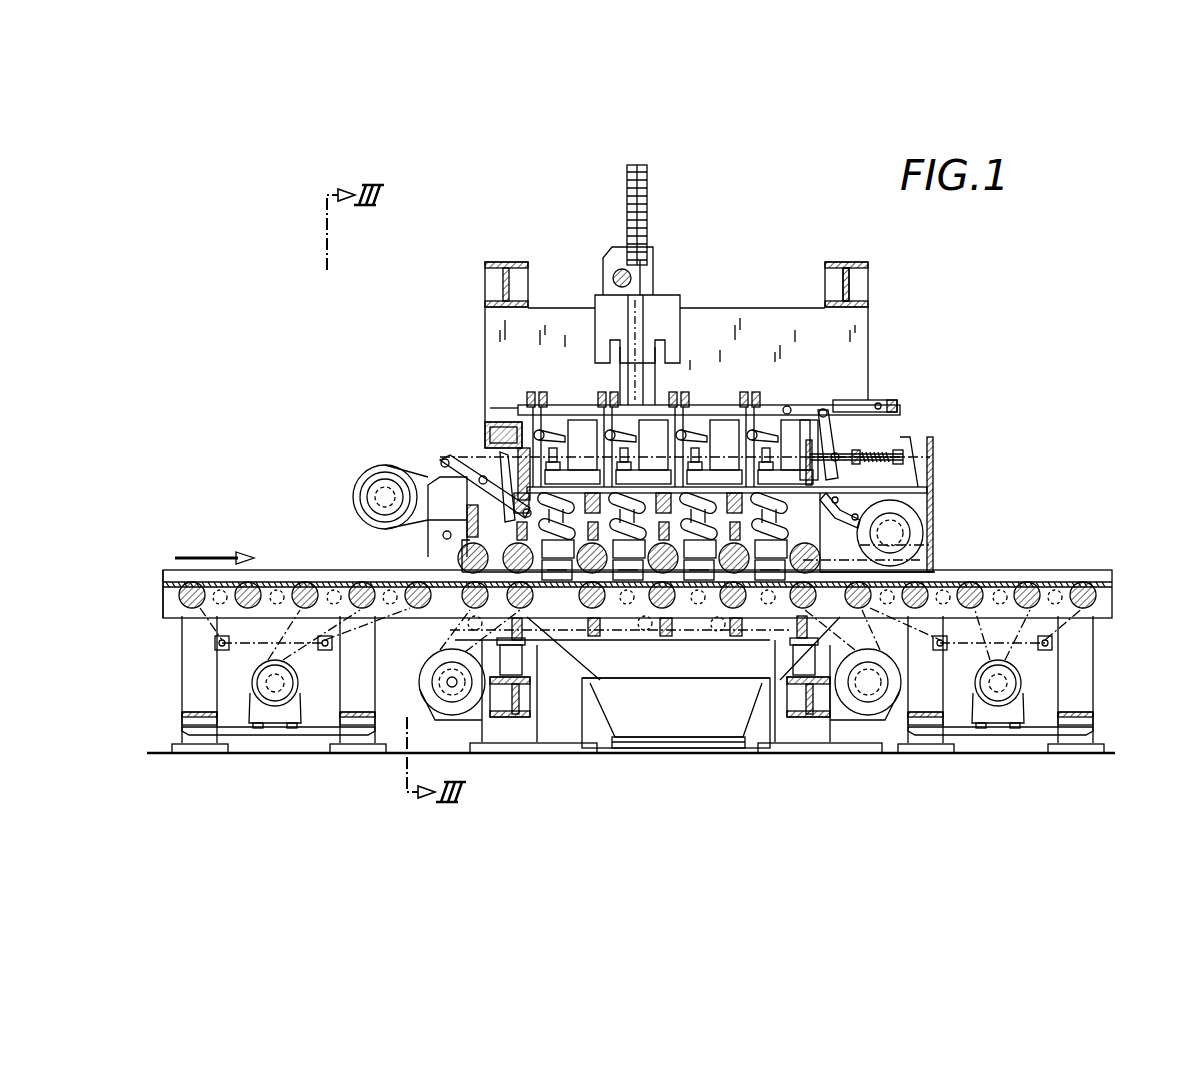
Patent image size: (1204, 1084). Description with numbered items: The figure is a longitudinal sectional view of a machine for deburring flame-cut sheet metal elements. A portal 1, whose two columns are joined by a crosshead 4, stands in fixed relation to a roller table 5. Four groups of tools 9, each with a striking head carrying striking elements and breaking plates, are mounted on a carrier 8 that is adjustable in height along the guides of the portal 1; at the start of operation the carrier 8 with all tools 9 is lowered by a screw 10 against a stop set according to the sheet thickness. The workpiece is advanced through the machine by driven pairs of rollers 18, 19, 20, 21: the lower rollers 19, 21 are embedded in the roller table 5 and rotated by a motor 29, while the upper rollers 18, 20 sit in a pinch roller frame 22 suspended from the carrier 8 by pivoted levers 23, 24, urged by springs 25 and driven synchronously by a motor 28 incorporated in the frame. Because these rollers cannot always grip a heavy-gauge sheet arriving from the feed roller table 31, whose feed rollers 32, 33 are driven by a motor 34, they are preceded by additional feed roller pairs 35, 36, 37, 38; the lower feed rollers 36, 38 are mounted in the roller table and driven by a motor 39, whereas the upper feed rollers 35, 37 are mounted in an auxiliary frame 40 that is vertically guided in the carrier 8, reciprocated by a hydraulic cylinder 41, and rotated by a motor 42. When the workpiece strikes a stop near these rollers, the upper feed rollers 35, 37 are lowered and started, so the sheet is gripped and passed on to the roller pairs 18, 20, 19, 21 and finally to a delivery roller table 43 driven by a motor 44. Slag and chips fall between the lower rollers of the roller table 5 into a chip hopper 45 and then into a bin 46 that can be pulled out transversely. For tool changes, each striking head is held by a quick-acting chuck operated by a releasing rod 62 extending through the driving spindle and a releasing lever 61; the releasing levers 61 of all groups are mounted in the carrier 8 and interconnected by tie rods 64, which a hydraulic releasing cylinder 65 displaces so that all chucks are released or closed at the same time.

The portal 1 is at (745, 333).
The crosshead 4 is at (852, 283).
The roller table 5 is at (598, 680).
The carrier 8 is at (873, 483).
The tools 9 is at (490, 408).
The screw 10 is at (627, 195).
The upper roller 18 is at (712, 592).
The lower roller 19 is at (752, 592).
The upper roller 20 is at (930, 560).
The lower roller 21 is at (798, 608).
The pinch roller frame 22 is at (880, 513).
The pivoted lever 23 is at (510, 482).
The pivoted lever 24 is at (867, 412).
The springs 25 is at (873, 452).
The motor 28 is at (895, 532).
The motor 29 is at (872, 686).
The feed roller table 31 is at (165, 597).
The feed roller 32 is at (190, 600).
The feed roller 33 is at (262, 583).
The motor 34 is at (275, 705).
The upper feed roller 35 is at (462, 549).
The lower feed roller 36 is at (440, 700).
The upper feed roller 37 is at (495, 515).
The lower feed roller 38 is at (527, 616).
The motor 39 is at (452, 686).
The auxiliary frame 40 is at (447, 520).
The hydraulic cylinder 41 is at (478, 425).
The motor 42 is at (385, 497).
The delivery roller table 43 is at (1105, 600).
The motor 44 is at (1003, 686).
The chip hopper 45 is at (647, 657).
The bin 46 is at (647, 715).
The releasing lever 61 is at (605, 398).
The releasing rod 62 is at (703, 405).
The tie rods 64 is at (800, 405).
The hydraulic releasing cylinder 65 is at (847, 402).